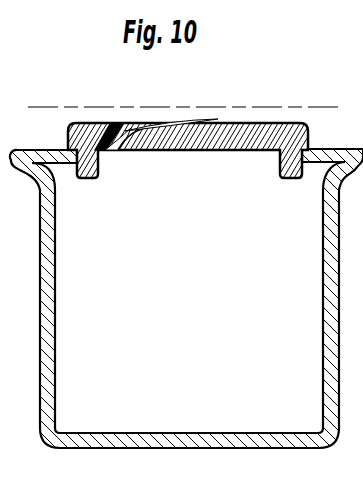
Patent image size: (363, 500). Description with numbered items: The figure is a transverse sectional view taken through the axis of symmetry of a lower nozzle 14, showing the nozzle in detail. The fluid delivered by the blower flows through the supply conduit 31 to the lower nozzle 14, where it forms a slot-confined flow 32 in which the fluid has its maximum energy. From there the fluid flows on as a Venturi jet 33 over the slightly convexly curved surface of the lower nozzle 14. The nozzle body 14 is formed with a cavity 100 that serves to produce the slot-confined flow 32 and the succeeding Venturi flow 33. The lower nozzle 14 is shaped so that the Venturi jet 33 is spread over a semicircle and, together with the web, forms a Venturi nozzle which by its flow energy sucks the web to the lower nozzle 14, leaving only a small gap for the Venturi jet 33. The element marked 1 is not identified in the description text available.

The container 1 is at (47, 108).
The lower nozzle 14 is at (267, 128).
The cavity 100 is at (108, 127).
The supply conduit 31 is at (115, 154).
The slot-confined flow 32 is at (147, 127).
The Venturi jet 33 is at (208, 118).